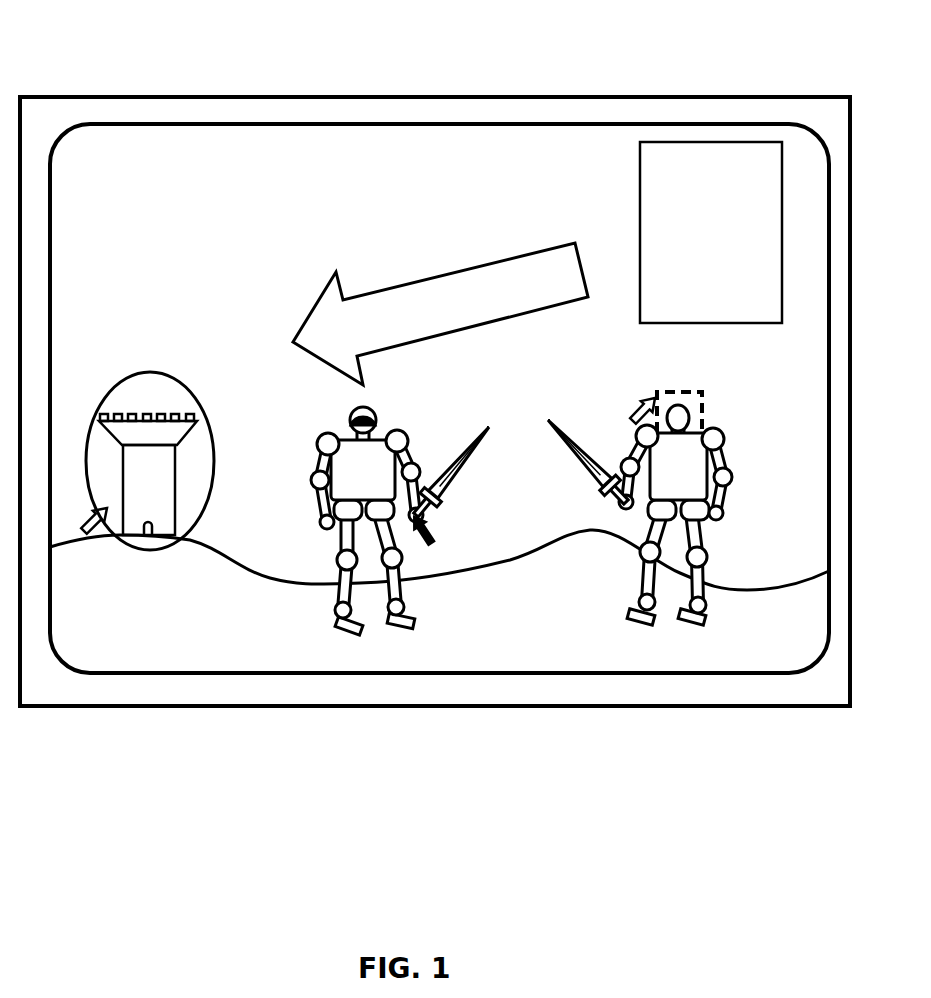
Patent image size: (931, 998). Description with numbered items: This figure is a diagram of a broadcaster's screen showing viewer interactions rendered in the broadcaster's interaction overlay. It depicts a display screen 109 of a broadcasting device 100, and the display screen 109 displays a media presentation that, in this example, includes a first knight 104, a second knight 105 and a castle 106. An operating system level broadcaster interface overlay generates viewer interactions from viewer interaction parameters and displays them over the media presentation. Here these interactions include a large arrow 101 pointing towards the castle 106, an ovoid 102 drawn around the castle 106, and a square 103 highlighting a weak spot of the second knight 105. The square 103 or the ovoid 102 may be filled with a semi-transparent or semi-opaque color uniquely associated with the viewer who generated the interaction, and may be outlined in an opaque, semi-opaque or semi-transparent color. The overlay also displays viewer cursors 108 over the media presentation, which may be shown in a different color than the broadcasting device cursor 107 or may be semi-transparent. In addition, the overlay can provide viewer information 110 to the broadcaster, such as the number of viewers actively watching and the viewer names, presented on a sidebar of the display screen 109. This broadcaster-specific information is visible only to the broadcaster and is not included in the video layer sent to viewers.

The broadcasting device 100 is at (113, 94).
The large arrow 101 is at (383, 289).
The ovoid 102 is at (155, 372).
The square 103 is at (665, 390).
The first knight 104 is at (400, 521).
The second knight 105 is at (640, 515).
The castle 106 is at (148, 474).
The broadcasting device cursor 107 is at (436, 540).
The viewer cursors 108 is at (96, 545).
The display screen 109 is at (550, 124).
The viewer information 110 is at (640, 187).